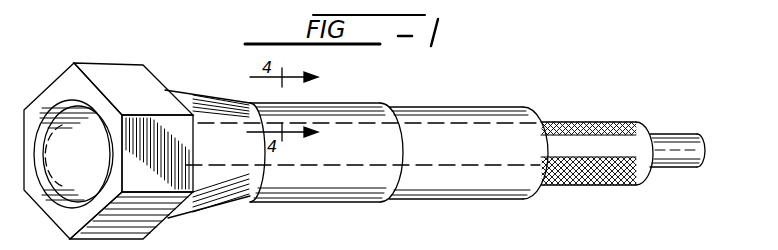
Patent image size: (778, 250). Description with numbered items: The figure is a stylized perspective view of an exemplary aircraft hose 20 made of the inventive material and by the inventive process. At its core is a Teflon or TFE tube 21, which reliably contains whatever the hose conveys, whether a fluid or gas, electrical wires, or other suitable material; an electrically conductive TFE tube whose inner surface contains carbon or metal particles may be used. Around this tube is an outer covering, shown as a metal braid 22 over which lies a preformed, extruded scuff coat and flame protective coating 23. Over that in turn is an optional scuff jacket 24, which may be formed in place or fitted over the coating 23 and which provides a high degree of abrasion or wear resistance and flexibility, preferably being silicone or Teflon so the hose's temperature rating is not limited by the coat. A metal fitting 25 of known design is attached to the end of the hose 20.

The hose 20 is at (635, 109).
The Teflon tube 21 is at (668, 133).
The metal braid 22 is at (572, 122).
The scuff coat, flame protective coating 23 is at (503, 107).
The scuff jacket 24 is at (333, 206).
The metal fitting 25 is at (143, 80).